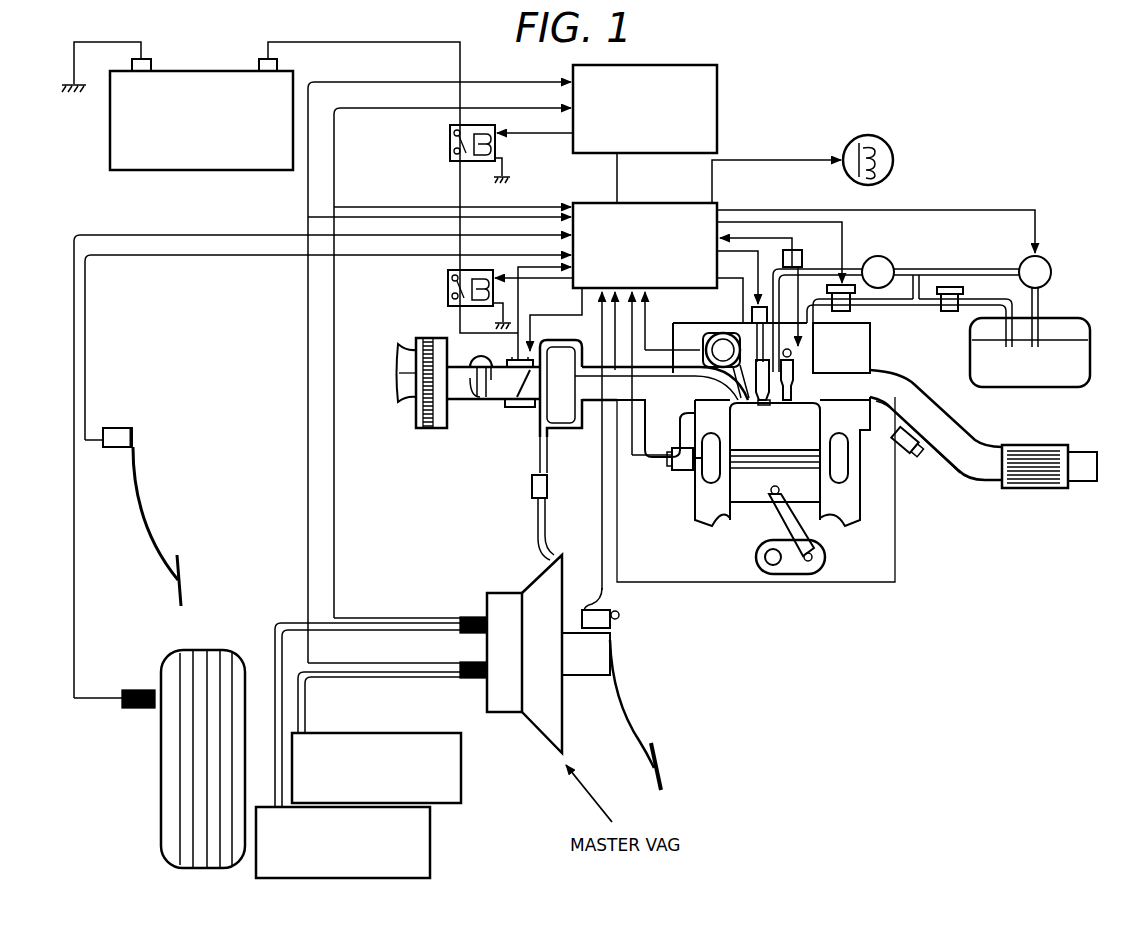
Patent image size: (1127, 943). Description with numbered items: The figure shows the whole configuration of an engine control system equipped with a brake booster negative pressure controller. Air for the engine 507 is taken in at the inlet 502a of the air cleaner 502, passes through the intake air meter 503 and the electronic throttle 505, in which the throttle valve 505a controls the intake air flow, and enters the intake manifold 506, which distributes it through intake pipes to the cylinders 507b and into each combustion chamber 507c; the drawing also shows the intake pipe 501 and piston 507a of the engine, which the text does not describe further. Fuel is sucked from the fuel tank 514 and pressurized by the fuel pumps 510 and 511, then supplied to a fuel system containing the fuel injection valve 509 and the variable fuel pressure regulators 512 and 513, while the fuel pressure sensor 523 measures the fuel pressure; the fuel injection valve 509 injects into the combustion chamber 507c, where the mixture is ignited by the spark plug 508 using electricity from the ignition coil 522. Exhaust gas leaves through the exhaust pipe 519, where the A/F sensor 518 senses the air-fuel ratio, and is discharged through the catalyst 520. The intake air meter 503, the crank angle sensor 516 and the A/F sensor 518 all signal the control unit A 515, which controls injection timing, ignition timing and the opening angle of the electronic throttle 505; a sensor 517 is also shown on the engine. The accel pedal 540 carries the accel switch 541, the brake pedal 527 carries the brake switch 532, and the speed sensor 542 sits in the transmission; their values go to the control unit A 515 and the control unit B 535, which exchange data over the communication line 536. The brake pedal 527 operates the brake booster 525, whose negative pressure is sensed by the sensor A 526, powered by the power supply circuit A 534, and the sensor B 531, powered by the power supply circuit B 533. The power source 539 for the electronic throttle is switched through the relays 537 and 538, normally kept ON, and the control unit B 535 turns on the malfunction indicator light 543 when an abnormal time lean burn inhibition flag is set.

The intake pipe 501 is at (592, 402).
The air cleaner 502 is at (432, 341).
The inlet 502a is at (403, 378).
The intake air meter 503 is at (489, 360).
The electronic throttle 505 is at (518, 410).
The throttle valve 505a is at (533, 378).
The intake manifold 506 is at (562, 420).
The engine 507 is at (863, 343).
The piston 507a is at (742, 493).
The cylinder 507b is at (848, 503).
The combustion chamber 507c is at (817, 442).
The spark plug 508 is at (762, 405).
The fuel injection valve 509 is at (790, 403).
The fuel pump 510 is at (1052, 267).
The fuel pump 511 is at (890, 258).
The variable fuel pressure regulator 512 is at (945, 312).
The variable fuel pressure regulator 513 is at (850, 312).
The fuel tank 514 is at (1060, 372).
The control unit A 515 is at (719, 210).
The crank angle sensor 516 is at (703, 336).
The knock sensor 517 is at (678, 471).
The A/F sensor 518 is at (898, 456).
The exhaust pipe 519 is at (972, 478).
The catalyst 520 is at (1027, 488).
The ignition coil 522 is at (751, 313).
The fuel pressure sensor 523 is at (802, 238).
The brake booster 525 is at (487, 716).
The sensor A 526 is at (458, 681).
The brake pedal 527 is at (662, 782).
The sensor B 531 is at (470, 613).
The brake switch 532 is at (608, 607).
The power supply circuit B 533 is at (431, 843).
The power supply circuit A 534 is at (462, 768).
The control unit B 535 is at (718, 124).
The communication line 536 is at (619, 168).
The relay 537 is at (449, 150).
The relay 538 is at (447, 290).
The power source for the electronic throttle 539 is at (180, 170).
The accel pedal 540 is at (182, 590).
The accel switch 541 is at (130, 427).
The speed sensor 542 is at (138, 710).
The malfunction indicator light 543 is at (873, 140).